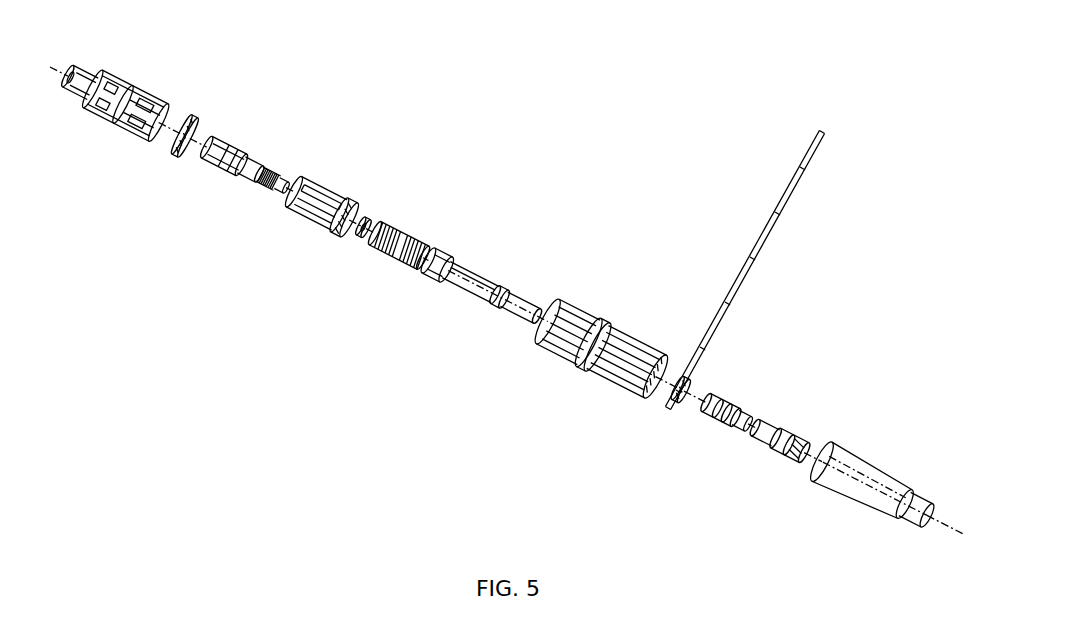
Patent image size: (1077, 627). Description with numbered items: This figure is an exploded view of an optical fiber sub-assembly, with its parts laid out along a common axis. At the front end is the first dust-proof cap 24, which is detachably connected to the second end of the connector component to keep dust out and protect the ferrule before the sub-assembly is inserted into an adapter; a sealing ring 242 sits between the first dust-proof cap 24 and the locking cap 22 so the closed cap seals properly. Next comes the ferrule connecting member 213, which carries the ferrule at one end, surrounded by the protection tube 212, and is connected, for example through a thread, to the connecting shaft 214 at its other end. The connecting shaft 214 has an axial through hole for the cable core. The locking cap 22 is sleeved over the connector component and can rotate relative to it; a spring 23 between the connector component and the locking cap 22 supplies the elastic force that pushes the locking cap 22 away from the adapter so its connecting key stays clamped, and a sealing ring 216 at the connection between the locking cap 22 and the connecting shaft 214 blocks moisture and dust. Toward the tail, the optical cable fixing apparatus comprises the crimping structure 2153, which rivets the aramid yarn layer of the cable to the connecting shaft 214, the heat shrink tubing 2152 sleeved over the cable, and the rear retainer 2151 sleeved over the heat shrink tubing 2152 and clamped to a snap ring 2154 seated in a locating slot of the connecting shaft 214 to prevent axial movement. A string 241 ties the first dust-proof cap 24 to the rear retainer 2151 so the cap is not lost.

The first dust-proof cap 24 is at (106, 73).
The sealing ring 242 is at (192, 110).
The ferrule connecting member 213 is at (236, 142).
The protection tube 212 is at (321, 229).
The sealing ring 216 is at (356, 246).
The spring 23 is at (400, 268).
The connecting shaft 214 is at (461, 298).
The locking cap 22 is at (574, 358).
The string 241 is at (793, 198).
The snap ring 2154 is at (687, 418).
The crimping structure 2153 is at (734, 431).
The heat shrink tubing 2152 is at (776, 451).
The rear retainer 2151 is at (851, 495).